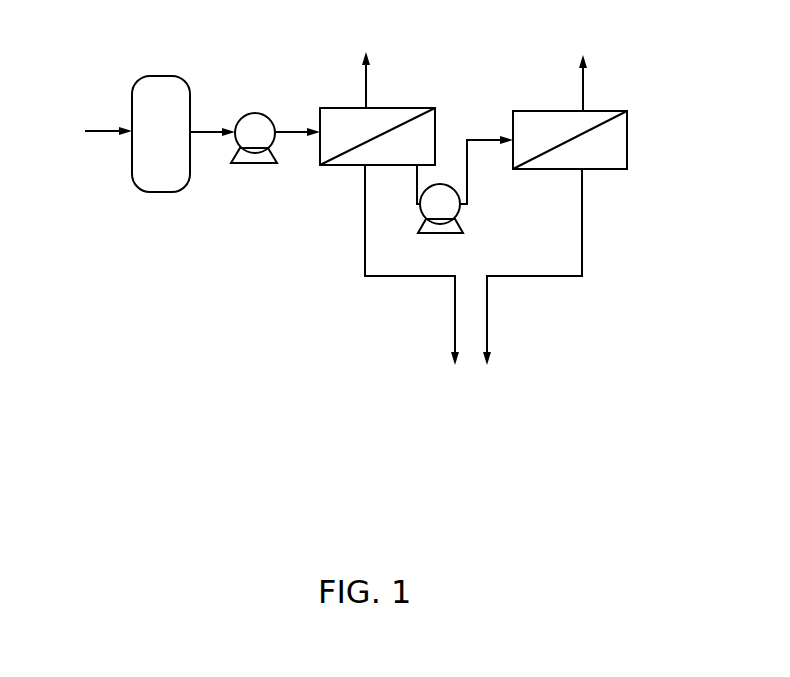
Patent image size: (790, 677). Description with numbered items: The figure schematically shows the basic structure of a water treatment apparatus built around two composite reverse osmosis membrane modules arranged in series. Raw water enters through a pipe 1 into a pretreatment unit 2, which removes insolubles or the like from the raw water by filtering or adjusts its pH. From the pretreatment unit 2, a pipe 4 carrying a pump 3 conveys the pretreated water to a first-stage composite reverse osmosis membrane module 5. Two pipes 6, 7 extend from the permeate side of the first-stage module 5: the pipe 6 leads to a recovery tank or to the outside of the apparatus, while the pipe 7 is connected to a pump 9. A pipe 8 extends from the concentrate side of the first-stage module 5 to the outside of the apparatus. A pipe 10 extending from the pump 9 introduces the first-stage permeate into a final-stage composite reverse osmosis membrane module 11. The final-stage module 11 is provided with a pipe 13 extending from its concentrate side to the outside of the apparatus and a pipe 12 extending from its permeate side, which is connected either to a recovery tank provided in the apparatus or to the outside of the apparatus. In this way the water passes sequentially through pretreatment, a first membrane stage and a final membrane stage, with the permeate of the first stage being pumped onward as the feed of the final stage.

The pipe 1 is at (98, 128).
The pretreatment unit 2 is at (163, 76).
The pump 3 is at (257, 112).
The pipe 4 is at (298, 136).
The first-stage composite reverse osmosis membrane module 5 is at (407, 108).
The pipe 6 is at (363, 232).
The pipe 7 is at (415, 192).
The pipe 8 is at (366, 92).
The pump 9 is at (440, 184).
The pipe 10 is at (467, 178).
The final-stage composite reverse osmosis membrane module 11 is at (527, 111).
The pipe 12 is at (583, 228).
The pipe 13 is at (583, 100).